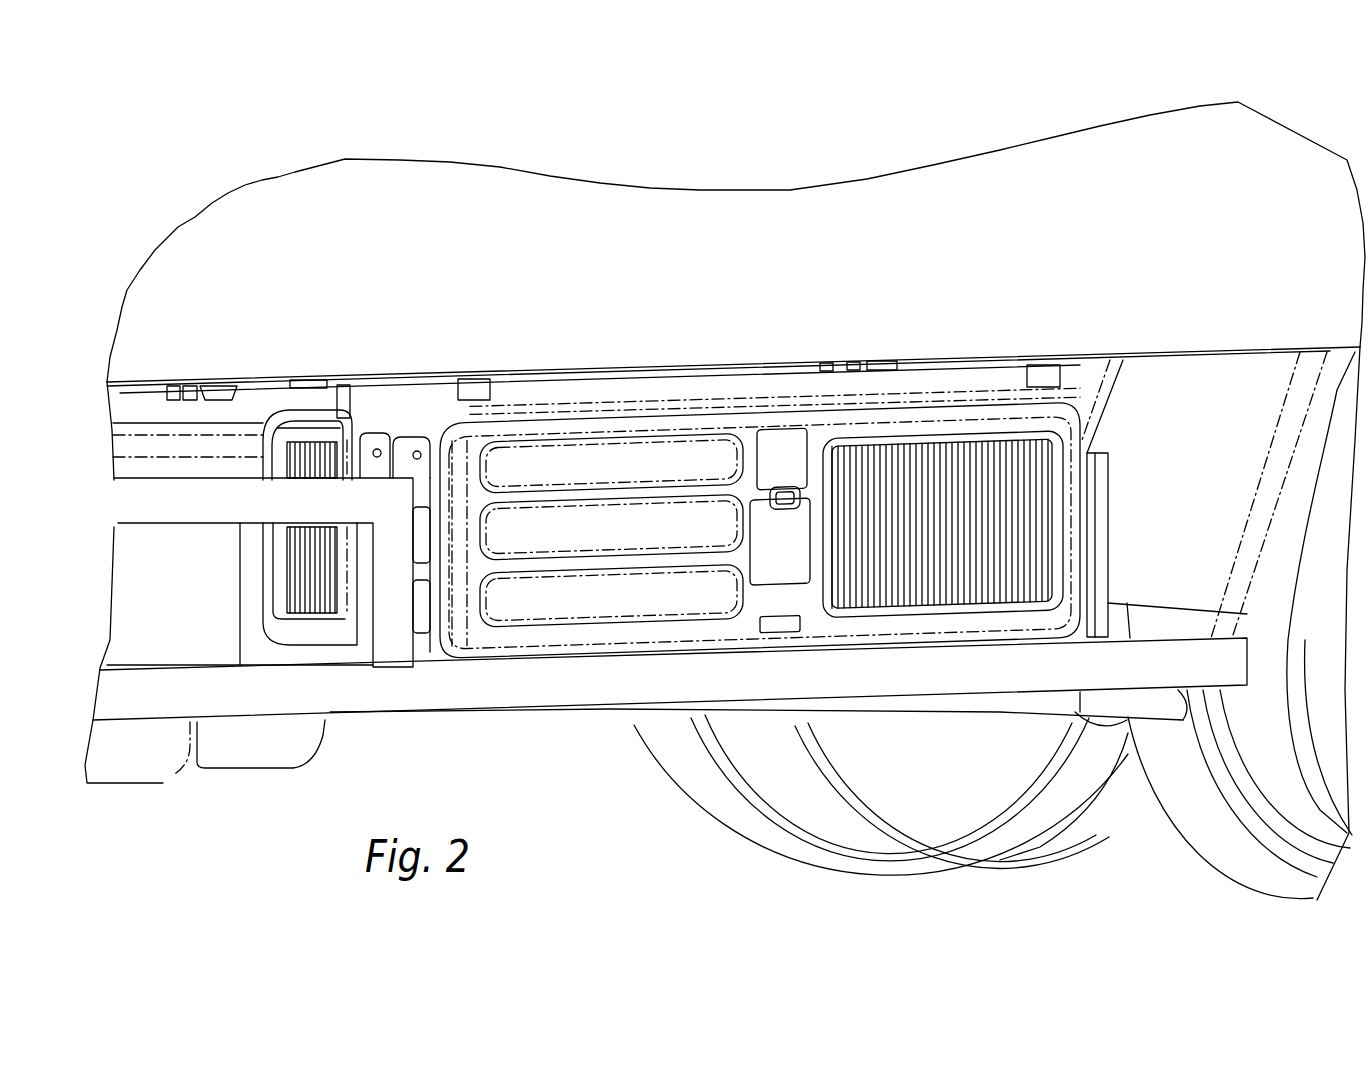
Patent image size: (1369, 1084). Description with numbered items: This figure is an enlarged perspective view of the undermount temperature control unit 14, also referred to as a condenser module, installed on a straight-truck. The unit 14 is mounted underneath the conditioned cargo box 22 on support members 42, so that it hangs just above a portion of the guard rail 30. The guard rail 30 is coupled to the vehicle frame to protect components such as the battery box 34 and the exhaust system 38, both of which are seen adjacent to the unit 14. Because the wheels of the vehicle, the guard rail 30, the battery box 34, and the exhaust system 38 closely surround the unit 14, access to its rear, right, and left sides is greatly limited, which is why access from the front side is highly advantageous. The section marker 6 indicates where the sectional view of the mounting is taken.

The conditioned cargo box 22 is at (1052, 172).
The support members 42 is at (250, 392).
The battery box 34 is at (152, 571).
The undermount temperature control unit 14 is at (460, 642).
The guard rails 30 is at (589, 689).
The exhaust system 38 is at (243, 757).
The section line 6- 6 is at (956, 200).